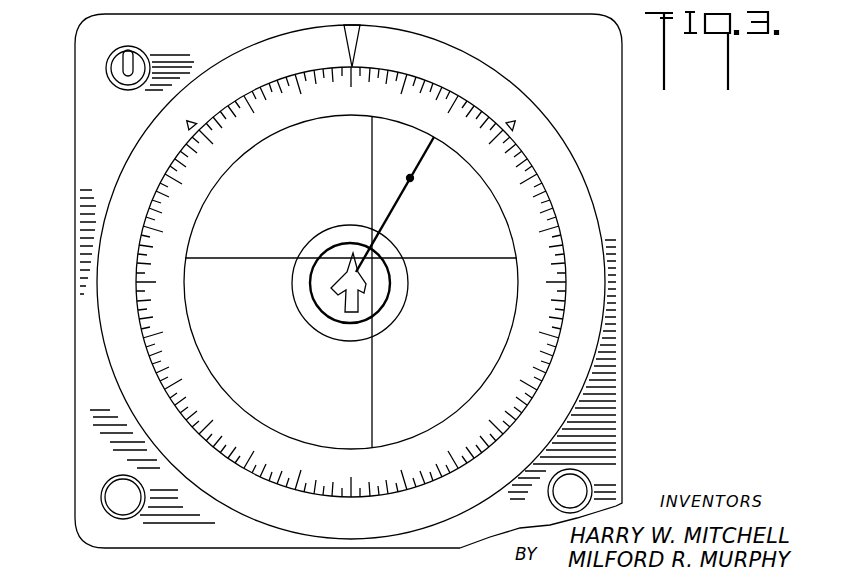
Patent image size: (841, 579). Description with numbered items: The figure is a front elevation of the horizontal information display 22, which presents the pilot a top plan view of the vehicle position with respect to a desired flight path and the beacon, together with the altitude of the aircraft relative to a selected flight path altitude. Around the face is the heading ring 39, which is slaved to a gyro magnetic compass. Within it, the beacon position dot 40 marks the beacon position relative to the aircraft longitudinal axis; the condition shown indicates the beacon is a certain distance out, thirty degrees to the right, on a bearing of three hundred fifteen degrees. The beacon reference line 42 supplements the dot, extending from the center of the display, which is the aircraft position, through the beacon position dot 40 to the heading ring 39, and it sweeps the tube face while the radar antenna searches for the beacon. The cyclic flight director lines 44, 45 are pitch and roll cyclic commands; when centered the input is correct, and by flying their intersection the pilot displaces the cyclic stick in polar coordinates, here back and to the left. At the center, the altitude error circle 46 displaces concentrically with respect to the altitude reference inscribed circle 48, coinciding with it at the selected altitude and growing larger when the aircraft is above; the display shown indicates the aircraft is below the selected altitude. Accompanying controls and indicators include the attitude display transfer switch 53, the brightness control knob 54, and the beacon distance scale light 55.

The horizontal information display 22 is at (656, 232).
The heading ring 39 is at (473, 105).
The beacon position dot 40 is at (414, 181).
The beacon reference line 42 is at (394, 212).
The cyclic flight director line 44 is at (370, 166).
The cyclic flight director line 45 is at (271, 258).
The altitude error circle 46 is at (390, 295).
The altitude reference inscribed circle 48 is at (389, 323).
The attitude display transfer switch 53 is at (114, 76).
The brightness control knob 54 is at (580, 487).
The beacon distance scale light 55 is at (104, 480).